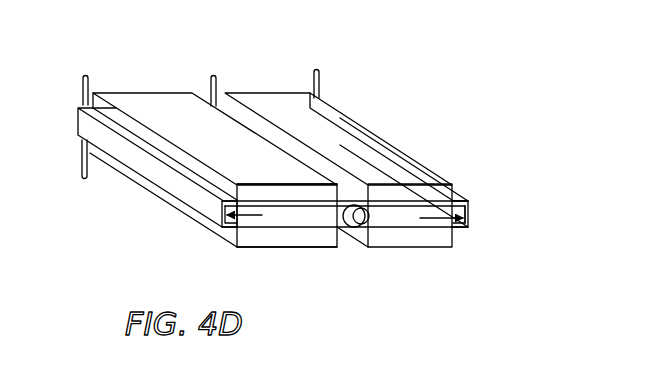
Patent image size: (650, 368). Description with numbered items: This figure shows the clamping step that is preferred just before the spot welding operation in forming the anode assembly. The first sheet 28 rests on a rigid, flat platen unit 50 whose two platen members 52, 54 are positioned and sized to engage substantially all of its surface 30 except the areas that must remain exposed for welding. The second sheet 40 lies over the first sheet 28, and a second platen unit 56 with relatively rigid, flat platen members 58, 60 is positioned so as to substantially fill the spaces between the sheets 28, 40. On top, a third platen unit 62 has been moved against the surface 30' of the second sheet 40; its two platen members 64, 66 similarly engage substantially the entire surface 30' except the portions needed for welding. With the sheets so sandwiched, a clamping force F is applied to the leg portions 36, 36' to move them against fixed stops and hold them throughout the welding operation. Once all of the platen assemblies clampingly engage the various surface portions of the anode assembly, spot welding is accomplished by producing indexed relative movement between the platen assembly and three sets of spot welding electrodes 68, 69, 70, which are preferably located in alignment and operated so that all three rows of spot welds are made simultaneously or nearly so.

The first sheet 28 is at (265, 236).
The surface 30 is at (365, 247).
The surface 30' is at (287, 178).
The leg portion 36 is at (157, 167).
The leg portion 36' is at (480, 221).
The second sheet 40 is at (488, 178).
The platen unit 50 is at (210, 237).
The platen member 52 is at (287, 238).
The platen member 54 is at (406, 244).
The second platen unit 56 is at (476, 217).
The platen member 58 is at (417, 222).
The platen member 60 is at (305, 216).
The third platen unit 62 is at (452, 152).
The platen member 64 is at (386, 160).
The platen member 66 is at (158, 104).
The spot welding electrode 68 is at (80, 139).
The spot welding electrode 69 is at (209, 93).
The spot welding electrode 70 is at (320, 89).